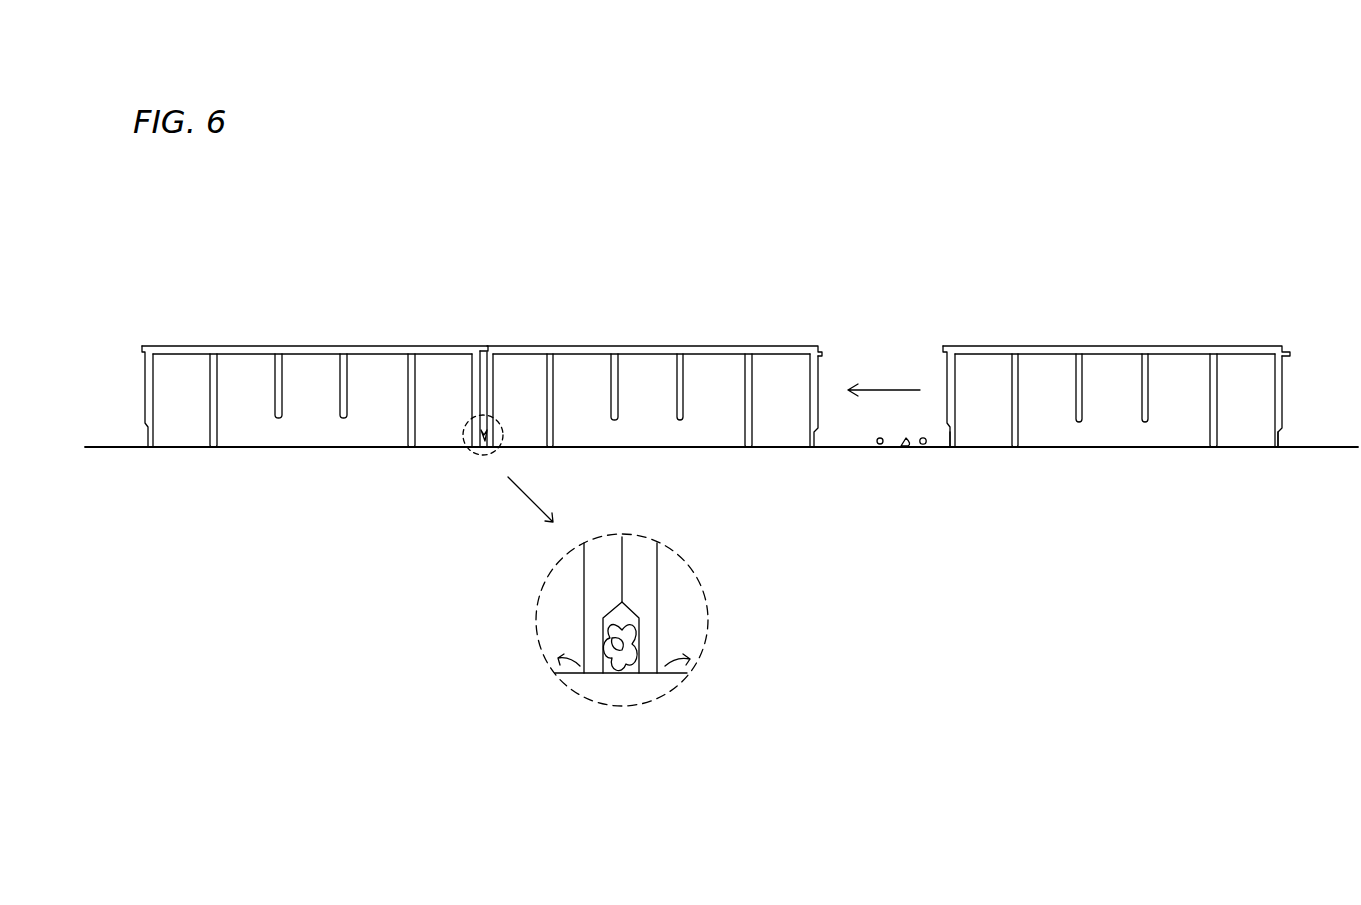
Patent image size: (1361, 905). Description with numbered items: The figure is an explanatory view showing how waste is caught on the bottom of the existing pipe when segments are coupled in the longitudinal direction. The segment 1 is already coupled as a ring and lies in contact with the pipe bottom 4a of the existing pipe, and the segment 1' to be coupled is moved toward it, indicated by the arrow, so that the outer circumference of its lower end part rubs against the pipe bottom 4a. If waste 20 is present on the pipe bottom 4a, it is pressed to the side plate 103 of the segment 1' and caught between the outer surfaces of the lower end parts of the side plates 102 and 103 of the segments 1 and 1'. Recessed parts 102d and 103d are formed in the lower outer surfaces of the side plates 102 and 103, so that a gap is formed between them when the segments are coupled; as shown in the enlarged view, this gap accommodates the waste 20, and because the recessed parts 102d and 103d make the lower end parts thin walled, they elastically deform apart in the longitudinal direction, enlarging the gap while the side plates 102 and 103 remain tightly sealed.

The segment 1 is at (315, 352).
The segment to be coupled 1' is at (888, 353).
The side plate 102 is at (472, 385).
The side plate 103 is at (144, 390).
The recessed part 102d is at (1282, 450).
The recessed part 103d is at (948, 450).
The waste 20 is at (907, 448).
The pipe bottom 4a is at (1330, 447).